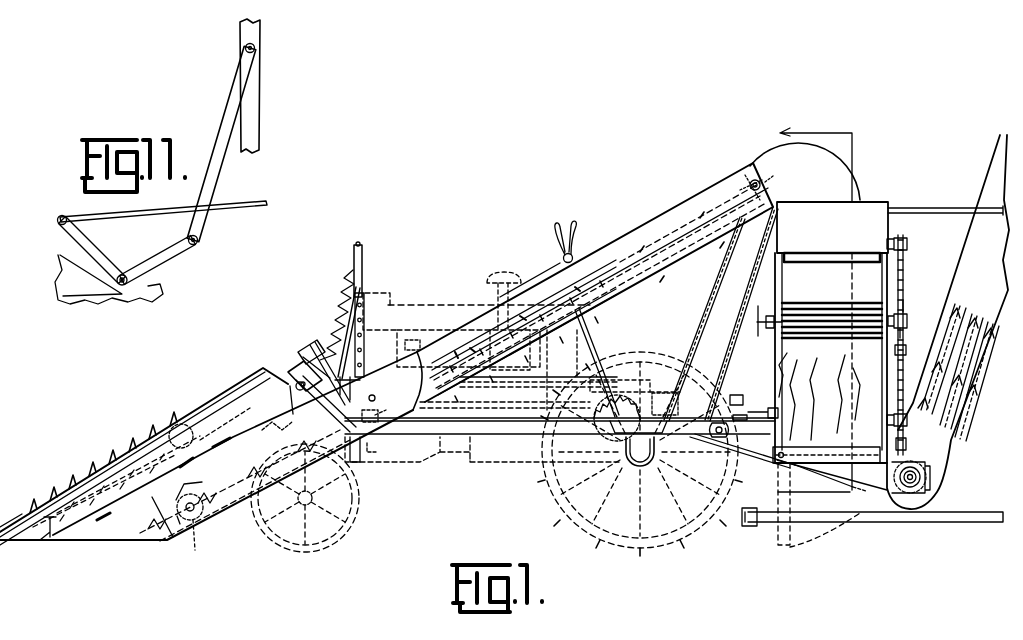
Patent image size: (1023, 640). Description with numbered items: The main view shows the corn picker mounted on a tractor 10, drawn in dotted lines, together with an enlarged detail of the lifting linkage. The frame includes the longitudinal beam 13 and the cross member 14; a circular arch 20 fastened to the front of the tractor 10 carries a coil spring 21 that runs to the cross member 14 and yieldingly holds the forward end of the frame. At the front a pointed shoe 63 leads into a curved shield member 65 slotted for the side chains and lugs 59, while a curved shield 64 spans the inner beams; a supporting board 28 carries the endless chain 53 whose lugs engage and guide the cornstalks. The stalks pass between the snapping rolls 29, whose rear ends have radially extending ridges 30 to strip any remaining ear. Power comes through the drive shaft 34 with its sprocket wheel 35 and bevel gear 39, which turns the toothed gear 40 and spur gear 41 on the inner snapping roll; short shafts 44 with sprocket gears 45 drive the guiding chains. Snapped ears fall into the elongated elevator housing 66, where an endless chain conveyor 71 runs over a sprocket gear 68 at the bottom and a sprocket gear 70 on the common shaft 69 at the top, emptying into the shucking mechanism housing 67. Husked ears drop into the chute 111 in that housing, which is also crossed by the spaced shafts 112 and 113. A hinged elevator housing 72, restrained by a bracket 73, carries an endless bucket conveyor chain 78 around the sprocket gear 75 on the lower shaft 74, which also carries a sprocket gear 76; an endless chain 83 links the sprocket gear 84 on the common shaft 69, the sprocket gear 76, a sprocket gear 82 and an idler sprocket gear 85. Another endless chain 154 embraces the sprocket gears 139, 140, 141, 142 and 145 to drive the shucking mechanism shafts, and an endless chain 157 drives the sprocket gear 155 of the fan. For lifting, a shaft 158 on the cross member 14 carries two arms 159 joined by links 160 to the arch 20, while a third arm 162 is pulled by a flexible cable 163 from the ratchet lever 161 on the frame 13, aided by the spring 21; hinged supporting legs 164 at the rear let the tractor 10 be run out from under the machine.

In FIG. 1, the tractor 10 is at (437, 306).
In FIG. 1, the longitudinal beam 13 is at (482, 436).
In FIG. 1, the cross member 14 is at (358, 450).
In FIG. 11, the circular arch 20 is at (252, 100).
In FIG. 1, the circular arch 20 is at (362, 270).
In FIG. 1, the coil spring 21 is at (336, 318).
In FIG. 1, the supporting board 28 is at (262, 404).
In FIG. 1, the snapping rolls 29 is at (245, 485).
In FIG. 1, the longitudinal radially extending ridges 30 is at (280, 421).
In FIG. 1, the drive shaft 34 is at (497, 423).
In FIG. 1, the sprocket wheel 35 is at (778, 413).
In FIG. 1, the bevel gear 39 is at (375, 411).
In FIG. 1, the toothed gear 40 is at (392, 398).
In FIG. 1, the second spur gear 41 is at (289, 393).
In FIG. 1, the short shafts 44 is at (290, 368).
In FIG. 1, the sprocket gear 45 is at (318, 348).
In FIG. 1, the endless chain 53 is at (187, 501).
In FIG. 1, the side chains and lugs 59 is at (133, 448).
In FIG. 1, the pointed shoe 63 is at (13, 526).
In FIG. 11, the curved shield 64 is at (158, 289).
In FIG. 1, the curved shield member 65 is at (217, 403).
In FIG. 1, the elevator housing 66 is at (646, 222).
In FIG. 1, the shucking mechanism housing 67 is at (819, 333).
In FIG. 1, the sprocket gear 68 is at (197, 544).
In FIG. 1, the common shaft 69 is at (752, 178).
In FIG. 1, the sprocket gear 70 is at (780, 171).
In FIG. 1, the endless chain conveyor 71 is at (538, 281).
In FIG. 1, the elevator housing 72 is at (948, 322).
In FIG. 1, the bracket 73 is at (932, 208).
In FIG. 1, the shaft 74 is at (926, 476).
In FIG. 1, the sprocket gear 75 is at (872, 509).
In FIG. 1, the sprocket gear 76 is at (865, 496).
In FIG. 1, the endless bucket conveyor chain 78 is at (975, 384).
In FIG. 1, the sprocket gear 82 is at (680, 409).
In FIG. 1, the endless chain 83 is at (710, 310).
In FIG. 1, the sprocket gear 84 is at (750, 228).
In FIG. 1, the idler sprocket gear 85 is at (788, 456).
In FIG. 1, the chute 111 is at (830, 371).
In FIG. 1, the shaft 112 is at (906, 356).
In FIG. 1, the shaft 113 is at (909, 305).
In FIG. 1, the sprocket gear 139 is at (907, 244).
In FIG. 1, the sprocket gear 140 is at (908, 320).
In FIG. 1, the sprocket gear 141 is at (912, 332).
In FIG. 1, the sprocket gear 142 is at (908, 420).
In FIG. 1, the sprocket gear 145 is at (907, 445).
In FIG. 1, the endless chain 154 is at (904, 274).
In FIG. 1, the sprocket gear 155 is at (760, 310).
In FIG. 1, the endless chain 157 is at (374, 392).
In FIG. 11, the shaft 158 is at (123, 273).
In FIG. 1, the shaft 158 is at (279, 388).
In FIG. 11, the arms 159 is at (160, 256).
In FIG. 11, the links 160 is at (220, 176).
In FIG. 1, the links 160 is at (366, 325).
In FIG. 1, the ratchet lever 161 is at (571, 255).
In FIG. 11, the third arm 162 is at (100, 252).
In FIG. 11, the flexible cable 163 is at (246, 204).
In FIG. 1, the flexible cable 163 is at (560, 372).
In FIG. 1, the hinged supporting legs 164 is at (868, 450).